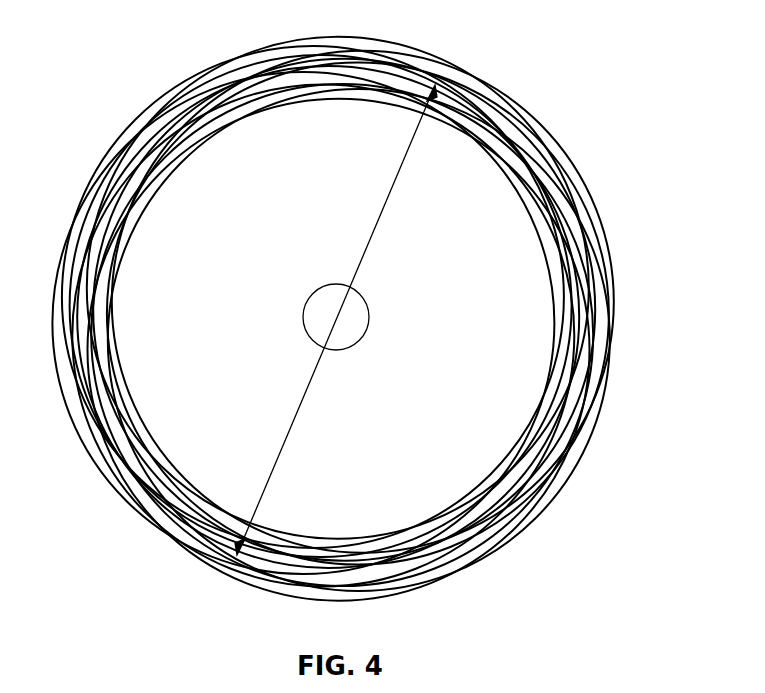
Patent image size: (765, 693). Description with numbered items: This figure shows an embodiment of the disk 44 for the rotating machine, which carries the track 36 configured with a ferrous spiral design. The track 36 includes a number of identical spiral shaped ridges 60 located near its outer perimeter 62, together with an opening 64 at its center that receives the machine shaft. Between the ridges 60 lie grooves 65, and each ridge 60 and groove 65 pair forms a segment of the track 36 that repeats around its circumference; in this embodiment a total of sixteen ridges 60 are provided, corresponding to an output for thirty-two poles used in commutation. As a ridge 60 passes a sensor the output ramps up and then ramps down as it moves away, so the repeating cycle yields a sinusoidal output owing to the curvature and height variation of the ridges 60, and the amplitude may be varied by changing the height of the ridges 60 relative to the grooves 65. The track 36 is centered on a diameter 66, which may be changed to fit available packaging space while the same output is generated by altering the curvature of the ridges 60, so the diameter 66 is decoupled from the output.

The disk 44 is at (365, 307).
The track 36 is at (365, 307).
The spiral shaped ridges 60 is at (598, 322).
The outer perimeter 62 is at (268, 40).
The opening 64 is at (303, 312).
The grooves 65 is at (543, 478).
The diameter 66 is at (372, 238).